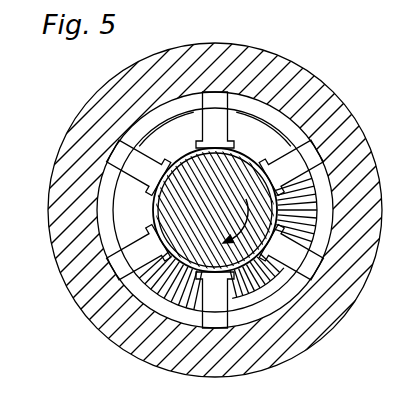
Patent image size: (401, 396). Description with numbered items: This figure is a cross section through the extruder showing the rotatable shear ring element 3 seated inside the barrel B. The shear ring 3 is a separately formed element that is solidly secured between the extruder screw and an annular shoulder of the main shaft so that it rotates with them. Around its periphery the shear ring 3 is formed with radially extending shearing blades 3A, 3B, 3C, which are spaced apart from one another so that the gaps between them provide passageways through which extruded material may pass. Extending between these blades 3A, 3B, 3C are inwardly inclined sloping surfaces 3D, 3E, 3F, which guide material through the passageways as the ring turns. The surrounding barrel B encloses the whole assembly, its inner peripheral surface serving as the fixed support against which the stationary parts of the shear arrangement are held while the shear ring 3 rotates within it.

The barrel B is at (328, 97).
The shear ring element 3 is at (280, 301).
The shearing blade 3A is at (123, 150).
The shearing blade 3B is at (222, 103).
The shearing blade 3C is at (297, 160).
The inwardly inclined sloping surface 3D is at (180, 127).
The inwardly inclined sloping surface 3E is at (248, 132).
The inwardly inclined sloping surface 3F is at (297, 226).